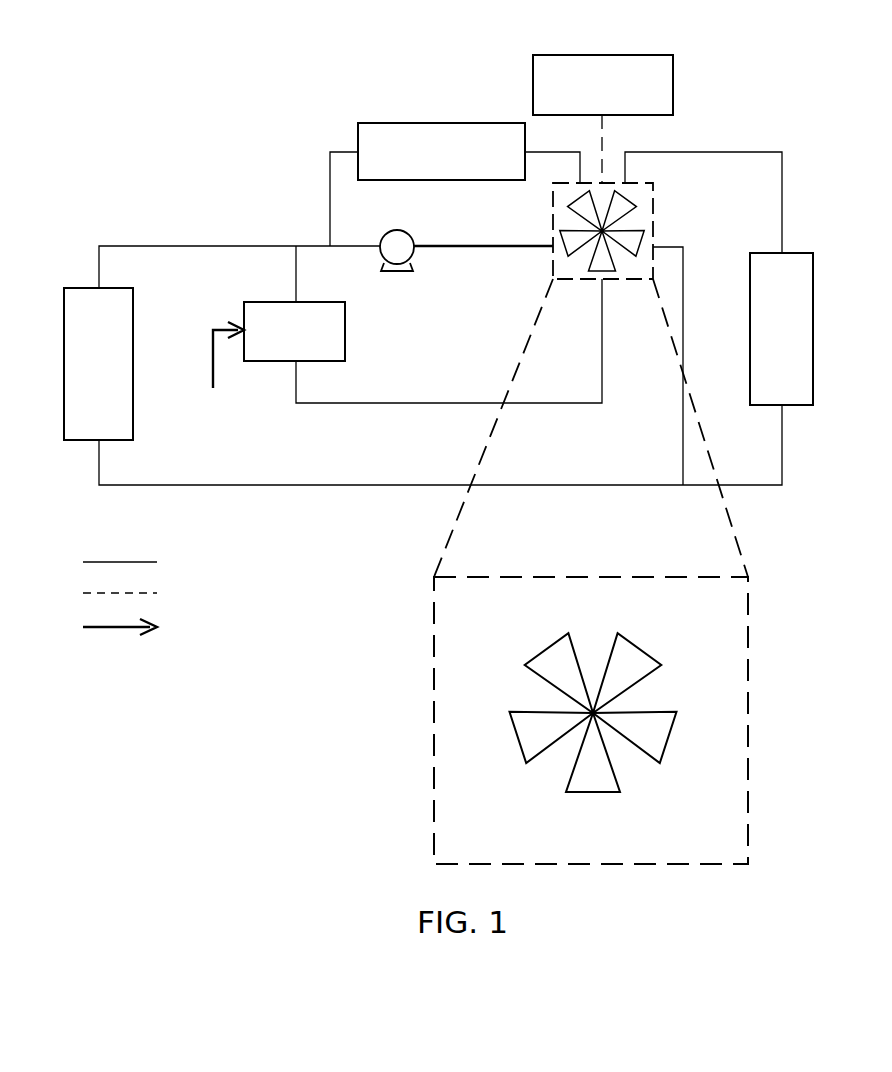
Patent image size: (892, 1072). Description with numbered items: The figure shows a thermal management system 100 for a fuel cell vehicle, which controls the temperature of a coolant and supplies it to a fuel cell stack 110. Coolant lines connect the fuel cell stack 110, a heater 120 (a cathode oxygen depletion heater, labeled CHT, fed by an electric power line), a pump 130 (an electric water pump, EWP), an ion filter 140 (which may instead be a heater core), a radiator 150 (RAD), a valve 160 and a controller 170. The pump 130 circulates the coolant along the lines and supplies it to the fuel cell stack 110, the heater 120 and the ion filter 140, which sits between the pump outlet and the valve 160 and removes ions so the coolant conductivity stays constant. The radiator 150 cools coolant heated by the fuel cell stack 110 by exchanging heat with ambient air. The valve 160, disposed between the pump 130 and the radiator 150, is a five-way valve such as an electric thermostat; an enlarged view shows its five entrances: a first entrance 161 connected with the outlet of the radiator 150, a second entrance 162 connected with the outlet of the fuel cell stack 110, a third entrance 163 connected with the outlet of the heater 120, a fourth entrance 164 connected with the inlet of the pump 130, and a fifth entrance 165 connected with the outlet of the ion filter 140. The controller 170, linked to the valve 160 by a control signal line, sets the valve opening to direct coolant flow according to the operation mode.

The thermal management system 100 is at (201, 75).
The fuel cell stack 110 is at (72, 288).
The heater 120 is at (259, 302).
The pump 130 is at (386, 233).
The ion filter 140 is at (419, 123).
The radiator 150 is at (753, 253).
The valve 160 is at (653, 204).
The first entrance 161 is at (640, 648).
The second entrance 162 is at (671, 740).
The third entrance 163 is at (590, 796).
The fourth entrance 164 is at (509, 733).
The fifth entrance 165 is at (548, 648).
The controller 170 is at (633, 55).